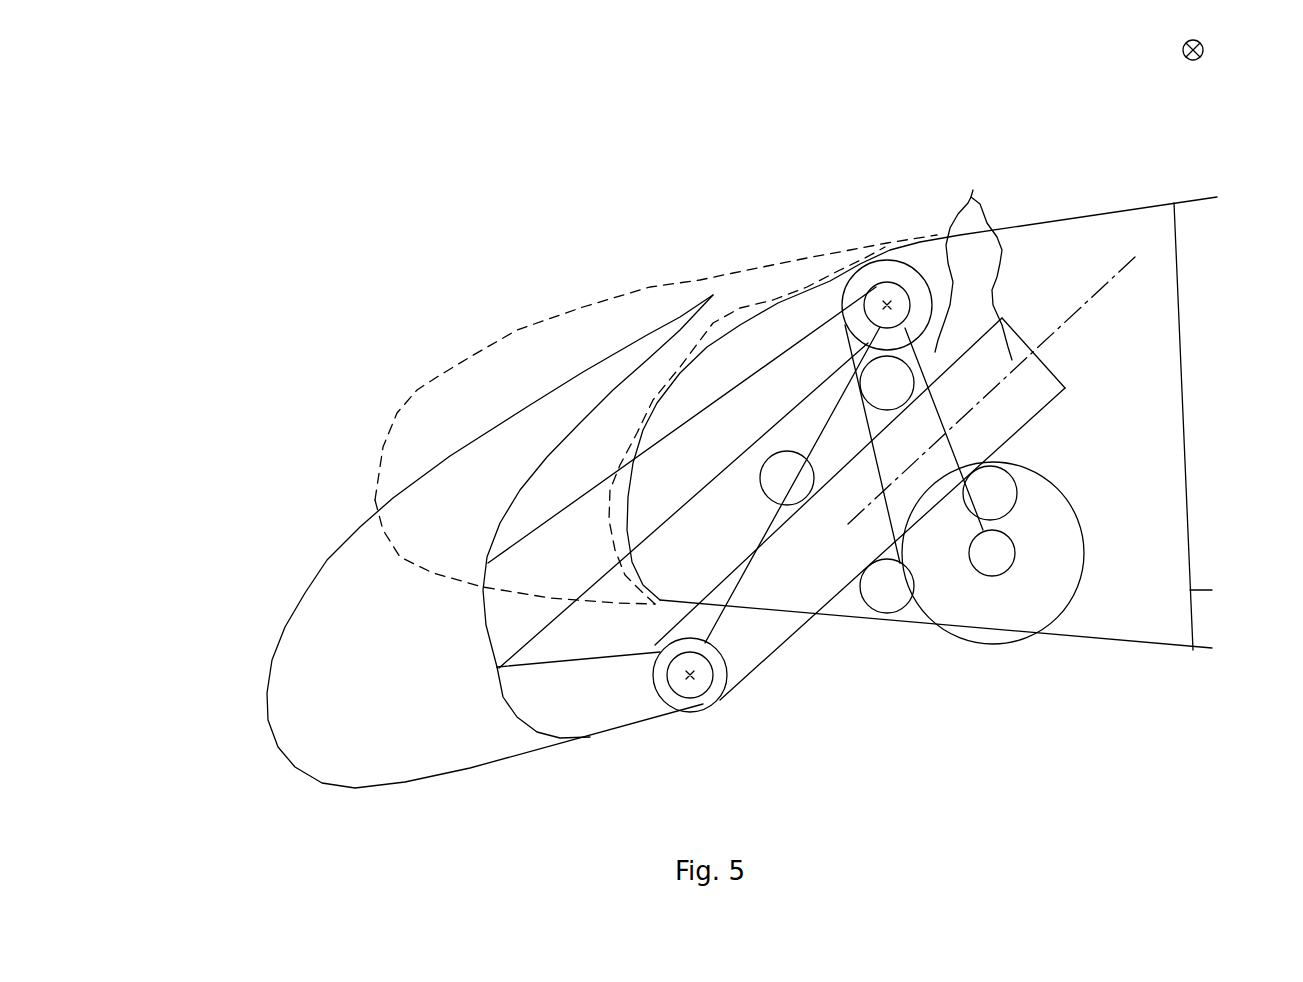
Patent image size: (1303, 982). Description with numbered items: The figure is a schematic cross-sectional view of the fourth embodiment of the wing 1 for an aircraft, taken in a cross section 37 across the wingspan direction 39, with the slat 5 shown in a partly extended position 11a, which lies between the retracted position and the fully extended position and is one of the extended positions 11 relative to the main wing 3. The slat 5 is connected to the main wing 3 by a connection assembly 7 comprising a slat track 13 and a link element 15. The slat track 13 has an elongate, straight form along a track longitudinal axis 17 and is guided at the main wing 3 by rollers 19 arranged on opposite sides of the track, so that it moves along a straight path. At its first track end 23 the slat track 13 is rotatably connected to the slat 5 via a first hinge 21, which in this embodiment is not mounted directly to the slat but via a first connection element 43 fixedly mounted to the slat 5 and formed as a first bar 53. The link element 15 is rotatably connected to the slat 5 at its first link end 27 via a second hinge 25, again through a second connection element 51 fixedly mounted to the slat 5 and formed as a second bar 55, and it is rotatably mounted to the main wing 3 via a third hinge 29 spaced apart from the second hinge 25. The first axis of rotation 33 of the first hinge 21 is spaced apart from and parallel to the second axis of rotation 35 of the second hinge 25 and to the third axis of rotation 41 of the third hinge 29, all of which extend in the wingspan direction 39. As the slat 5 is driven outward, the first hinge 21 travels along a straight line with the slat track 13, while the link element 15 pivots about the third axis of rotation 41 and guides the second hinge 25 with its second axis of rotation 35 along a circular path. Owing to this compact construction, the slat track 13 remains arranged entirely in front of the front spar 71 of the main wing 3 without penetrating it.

The wing 1 is at (747, 386).
The main wing 3 is at (922, 369).
The slat 5 is at (490, 541).
The connection assembly 7 is at (973, 261).
The extended position 11 is at (656, 325).
The partly extended position 11a is at (656, 325).
The slat track 13 is at (832, 567).
The link element 15 is at (884, 481).
The track longitudinal axis 17 is at (1062, 386).
The rollers 19 is at (880, 519).
The first hinge 21 is at (724, 694).
The first track end 23 is at (760, 665).
The second hinge 25 is at (907, 356).
The first link end 27 is at (792, 419).
The third hinge 29 is at (993, 590).
The first axis of rotation 33 is at (724, 694).
The second axis of rotation 35 is at (907, 356).
The cross section 37 is at (75, 306).
The wingspan direction 39 is at (1234, 61).
The third axis of rotation 41 is at (993, 590).
The first connection element 43 is at (578, 695).
The second connection element 51 is at (682, 477).
The first bar 53 is at (627, 714).
The second bar 55 is at (728, 467).
The front spar 71 is at (1225, 449).